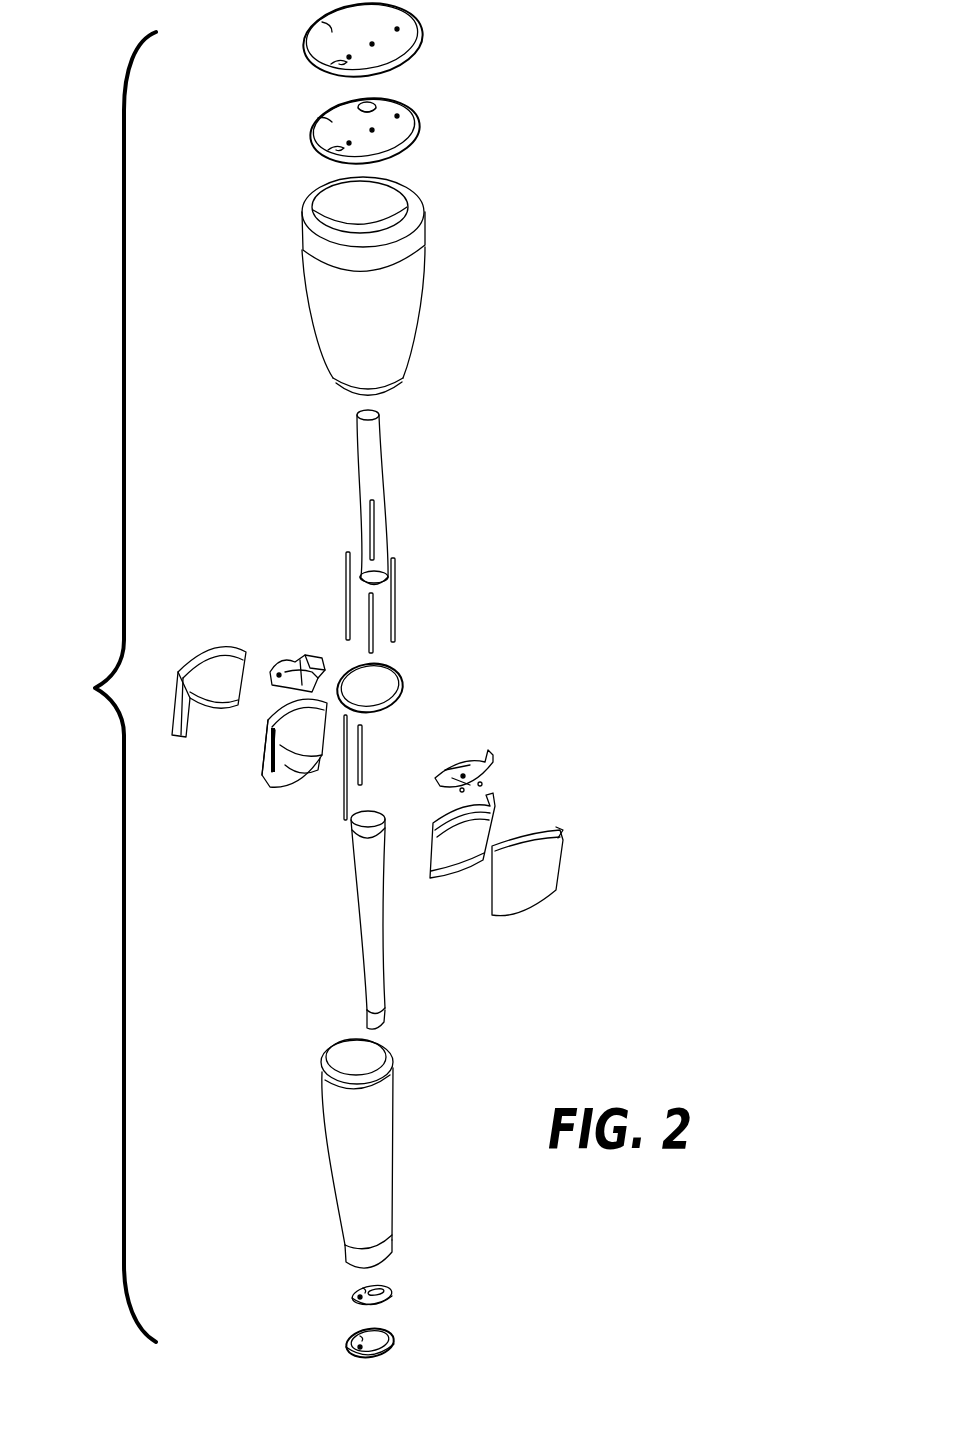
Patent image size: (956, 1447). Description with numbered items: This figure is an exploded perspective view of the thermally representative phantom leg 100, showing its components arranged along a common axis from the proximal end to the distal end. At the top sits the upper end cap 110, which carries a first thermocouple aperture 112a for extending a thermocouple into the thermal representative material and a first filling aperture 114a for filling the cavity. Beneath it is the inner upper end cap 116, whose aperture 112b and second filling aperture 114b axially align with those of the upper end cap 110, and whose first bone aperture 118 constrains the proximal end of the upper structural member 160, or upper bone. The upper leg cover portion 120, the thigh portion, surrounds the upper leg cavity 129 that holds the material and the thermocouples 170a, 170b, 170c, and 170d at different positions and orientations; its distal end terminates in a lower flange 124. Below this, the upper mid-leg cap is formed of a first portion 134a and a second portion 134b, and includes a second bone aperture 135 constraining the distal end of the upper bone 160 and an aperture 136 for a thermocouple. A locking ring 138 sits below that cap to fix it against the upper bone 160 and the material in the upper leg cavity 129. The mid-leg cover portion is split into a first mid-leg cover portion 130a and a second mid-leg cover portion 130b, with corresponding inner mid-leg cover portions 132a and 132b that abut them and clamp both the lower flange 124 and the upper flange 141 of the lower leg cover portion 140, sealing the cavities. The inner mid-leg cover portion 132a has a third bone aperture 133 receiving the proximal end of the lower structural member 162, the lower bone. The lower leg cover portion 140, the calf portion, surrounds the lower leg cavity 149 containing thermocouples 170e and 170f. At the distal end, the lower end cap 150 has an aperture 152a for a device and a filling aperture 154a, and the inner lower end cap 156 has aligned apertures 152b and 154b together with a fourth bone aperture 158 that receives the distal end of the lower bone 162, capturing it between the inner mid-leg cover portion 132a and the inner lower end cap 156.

The phantom leg 100 is at (105, 687).
The upper end cap 110 is at (413, 30).
The first thermocouple aperture 112a is at (322, 24).
The first filling aperture 114a is at (331, 64).
The inner upper end cap 116 is at (412, 128).
The first bone aperture 118 is at (372, 104).
The aperture 112b is at (318, 118).
The second filling aperture 114b is at (328, 150).
The upper leg cover portion 120 is at (407, 313).
The upper leg cavity 129 is at (372, 215).
The lower flange 124 is at (372, 392).
The upper structural member 160 is at (372, 470).
The thermocouple 170a is at (372, 527).
The thermocouple 170b is at (394, 598).
The thermocouple 170c is at (372, 638).
The thermocouple 170d is at (346, 562).
The thermocouple 170e is at (362, 733).
The thermocouple 170f is at (345, 812).
The locking ring 138 is at (405, 678).
The first mid-leg cover portion 130a is at (540, 885).
The second mid-leg cover portion 130b is at (216, 672).
The inner mid-leg cover portion 132a is at (482, 842).
The inner mid-leg cover portion 132b is at (268, 748).
The third bone aperture 133 is at (302, 768).
The first portion 134a is at (492, 754).
The second portion 134b is at (292, 656).
The second bone aperture 135 is at (316, 658).
The aperture 136 is at (278, 673).
The lower structural member 162 is at (378, 938).
The lower leg cover portion 140 is at (373, 1138).
The upper flange 141 is at (327, 1065).
The lower leg cavity 149 is at (365, 1063).
The lower end cap 150 is at (386, 1334).
The aperture 152a is at (360, 1338).
The filling aperture 154a is at (368, 1347).
The inner lower end cap 156 is at (390, 1296).
The fourth bone aperture 158 is at (382, 1287).
The aperture 152b is at (363, 1289).
The aperture 154b is at (358, 1297).